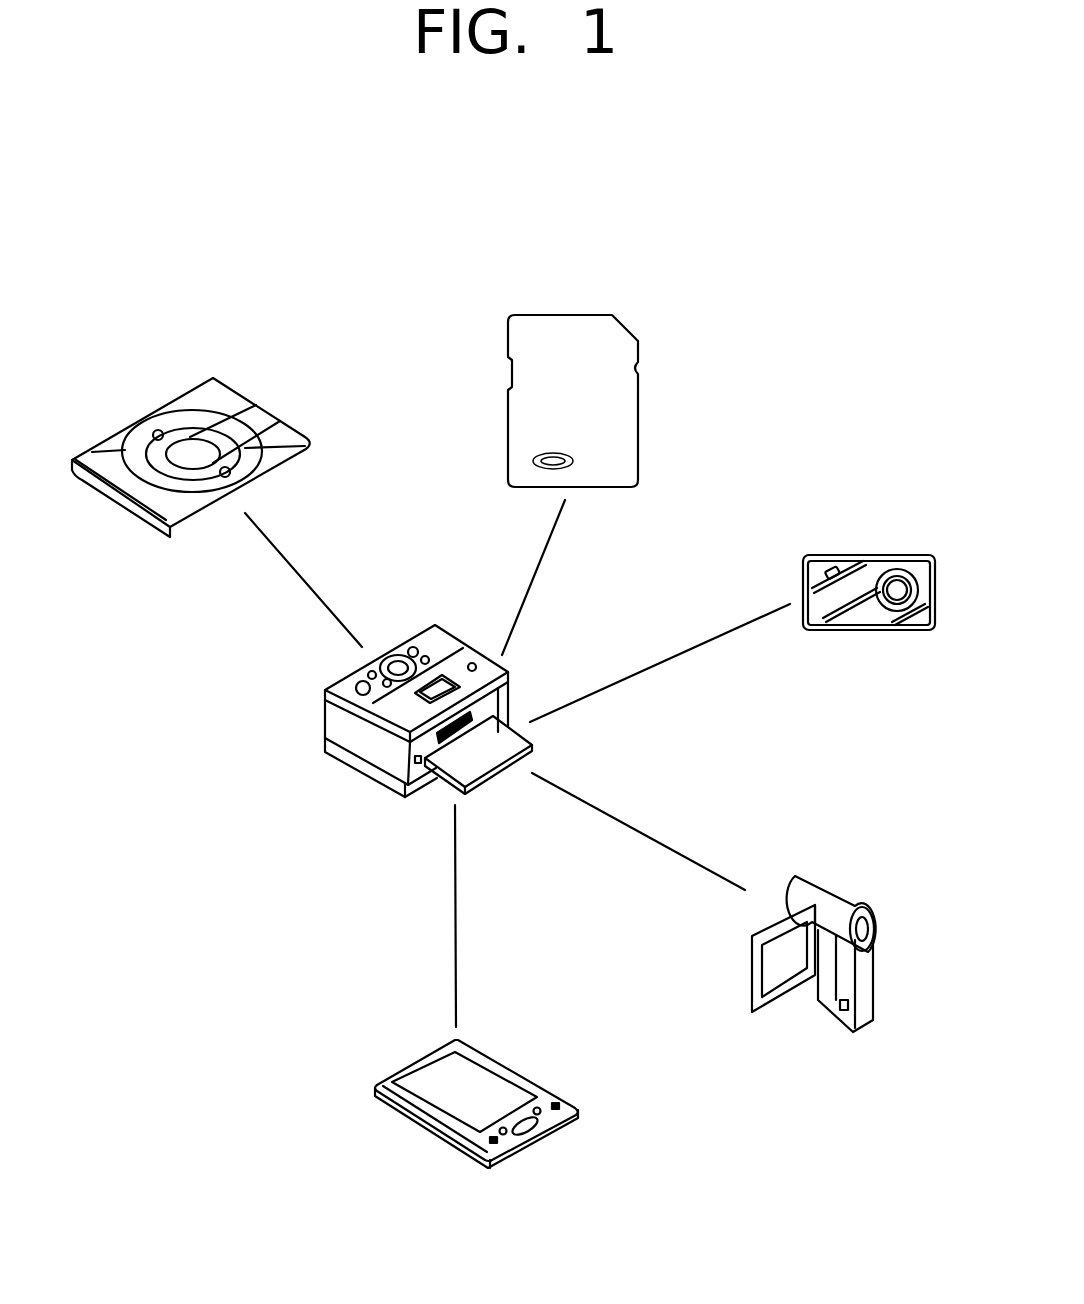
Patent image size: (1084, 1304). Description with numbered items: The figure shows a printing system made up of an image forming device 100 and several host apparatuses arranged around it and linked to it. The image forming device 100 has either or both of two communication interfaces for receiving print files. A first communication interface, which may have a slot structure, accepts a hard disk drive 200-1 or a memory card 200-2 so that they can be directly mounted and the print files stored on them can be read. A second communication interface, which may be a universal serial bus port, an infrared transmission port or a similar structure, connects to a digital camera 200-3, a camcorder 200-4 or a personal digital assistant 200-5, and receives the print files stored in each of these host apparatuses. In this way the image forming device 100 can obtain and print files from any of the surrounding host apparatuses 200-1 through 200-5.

The image forming device 100 is at (362, 773).
The hard disk drive (HDD) 200-1 is at (208, 378).
The memory card 200-2 is at (566, 313).
The digital camera 200-3 is at (879, 553).
The camcorder 200-4 is at (829, 890).
The personal digital assistant (PDA) 200-5 is at (496, 1160).